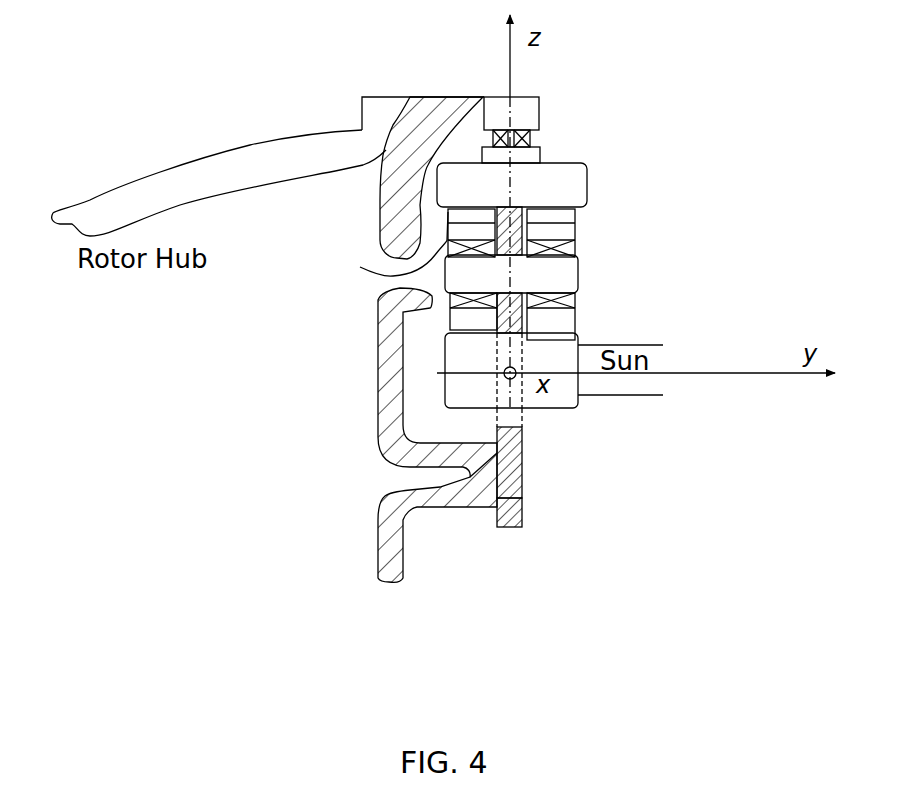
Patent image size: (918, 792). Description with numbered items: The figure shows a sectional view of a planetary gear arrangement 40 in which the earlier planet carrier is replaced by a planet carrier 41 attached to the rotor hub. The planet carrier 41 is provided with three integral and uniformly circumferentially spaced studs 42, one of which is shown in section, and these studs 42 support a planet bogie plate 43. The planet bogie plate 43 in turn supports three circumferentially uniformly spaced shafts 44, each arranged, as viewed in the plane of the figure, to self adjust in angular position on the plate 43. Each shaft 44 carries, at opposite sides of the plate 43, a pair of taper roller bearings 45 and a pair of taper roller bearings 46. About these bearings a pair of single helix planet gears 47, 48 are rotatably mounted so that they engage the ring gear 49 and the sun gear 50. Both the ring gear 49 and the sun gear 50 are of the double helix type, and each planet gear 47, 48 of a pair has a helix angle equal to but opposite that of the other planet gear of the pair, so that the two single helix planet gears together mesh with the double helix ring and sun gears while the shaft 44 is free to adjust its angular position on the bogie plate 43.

The rotor hub assembly 40 is at (624, 146).
The planet carrier 41 is at (378, 205).
The stud 42 is at (523, 466).
The planet bogie plate 43 is at (523, 517).
The shaft 44 is at (580, 277).
The taper roller bearings 45 is at (580, 243).
The taper roller bearings 46 is at (466, 257).
The single helix planet gear 47 is at (577, 228).
The single helix planet gear 48 is at (360, 268).
The ring gear 49 is at (588, 185).
The sun gear 50 is at (563, 363).